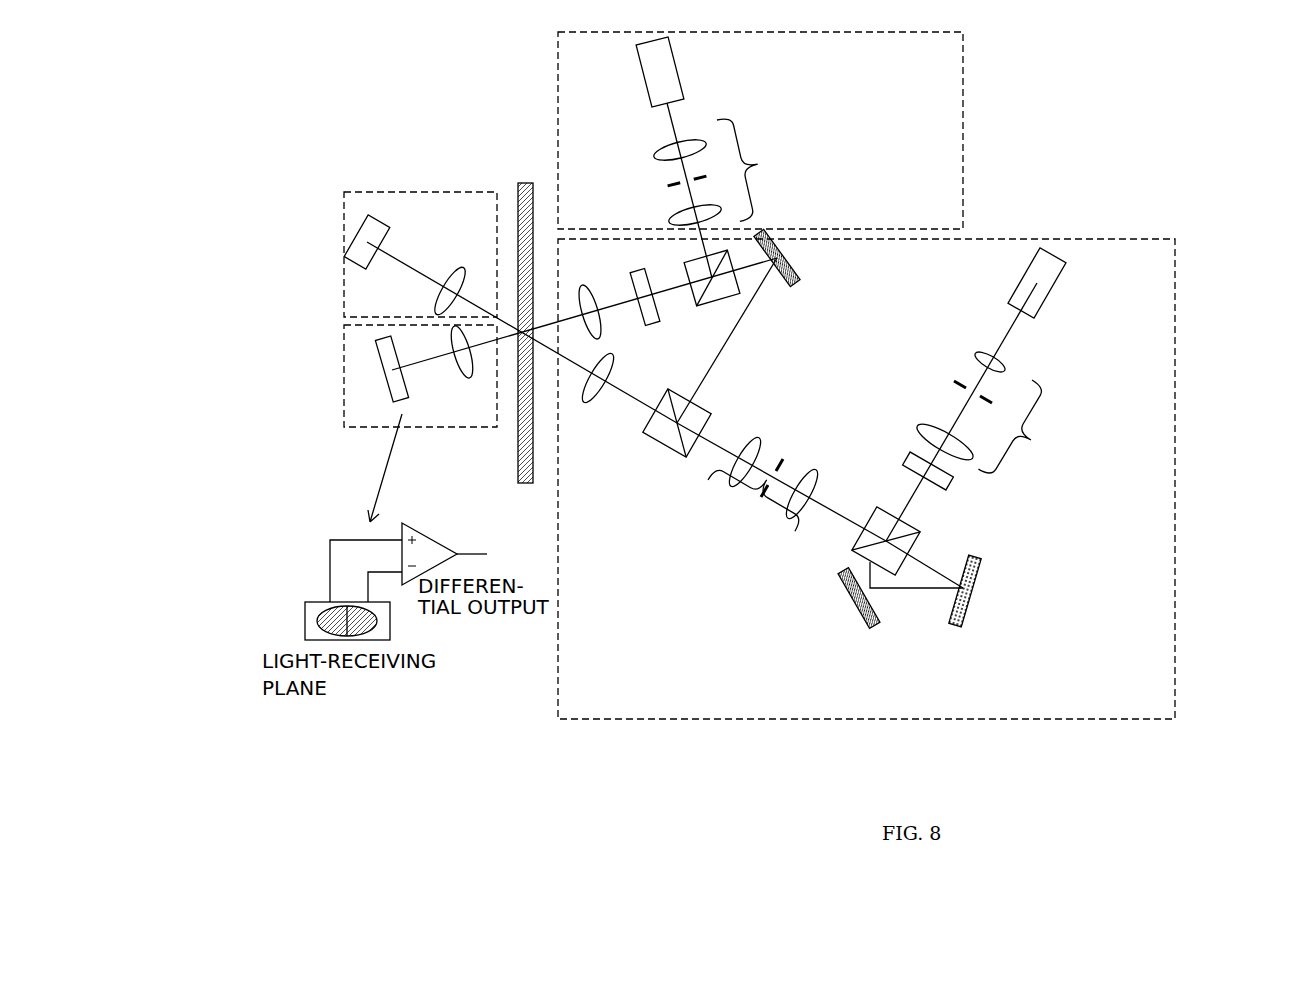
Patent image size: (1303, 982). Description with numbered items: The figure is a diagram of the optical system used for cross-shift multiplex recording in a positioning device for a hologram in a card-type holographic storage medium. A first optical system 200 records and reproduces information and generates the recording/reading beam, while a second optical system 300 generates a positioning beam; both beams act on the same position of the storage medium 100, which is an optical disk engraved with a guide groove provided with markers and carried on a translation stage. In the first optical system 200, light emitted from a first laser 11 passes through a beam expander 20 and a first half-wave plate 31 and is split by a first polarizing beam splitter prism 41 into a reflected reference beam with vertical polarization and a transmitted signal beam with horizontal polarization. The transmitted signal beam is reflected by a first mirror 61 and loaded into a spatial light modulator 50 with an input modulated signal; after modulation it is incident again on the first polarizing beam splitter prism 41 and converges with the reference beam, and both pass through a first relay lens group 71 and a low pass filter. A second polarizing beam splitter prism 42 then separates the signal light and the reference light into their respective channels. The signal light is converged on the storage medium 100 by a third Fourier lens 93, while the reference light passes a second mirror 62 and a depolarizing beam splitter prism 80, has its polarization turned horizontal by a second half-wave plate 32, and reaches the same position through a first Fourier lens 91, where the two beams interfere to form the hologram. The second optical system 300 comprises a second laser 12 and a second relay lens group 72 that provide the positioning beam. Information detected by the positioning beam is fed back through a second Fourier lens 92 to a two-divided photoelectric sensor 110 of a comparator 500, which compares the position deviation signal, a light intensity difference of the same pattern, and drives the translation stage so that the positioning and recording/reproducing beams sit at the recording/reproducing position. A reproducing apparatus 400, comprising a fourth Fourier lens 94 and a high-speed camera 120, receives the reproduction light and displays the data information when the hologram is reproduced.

The first laser 11 is at (1067, 302).
The second laser 12 is at (707, 72).
The beam expander 20 is at (1043, 445).
The first half-wave plate 31 is at (957, 488).
The second half-wave plate 32 is at (637, 266).
The first polarizing beam splitter prism 41 is at (933, 533).
The second polarizing beam splitter prism 42 is at (660, 458).
The spatial light modulator 50 is at (983, 570).
The first mirror 61 is at (865, 637).
The second mirror 62 is at (797, 257).
The first relay lens group 71 is at (735, 543).
The second relay lens group 72 is at (770, 162).
The depolarizing beam splitter prism 80 is at (708, 318).
The first Fourier lens 91 is at (586, 276).
The second Fourier lens 92 is at (468, 386).
The third Fourier lens 93 is at (592, 413).
The fourth Fourier lens 94 is at (458, 264).
The storage medium 100 is at (532, 178).
The two-divided photoelectric sensor 110 is at (373, 390).
The high-speed camera 120 is at (382, 205).
The first optical system 200 is at (1176, 385).
The second optical system 300 is at (970, 67).
The reproducing apparatus 400 is at (343, 218).
The comparator 500 is at (343, 362).